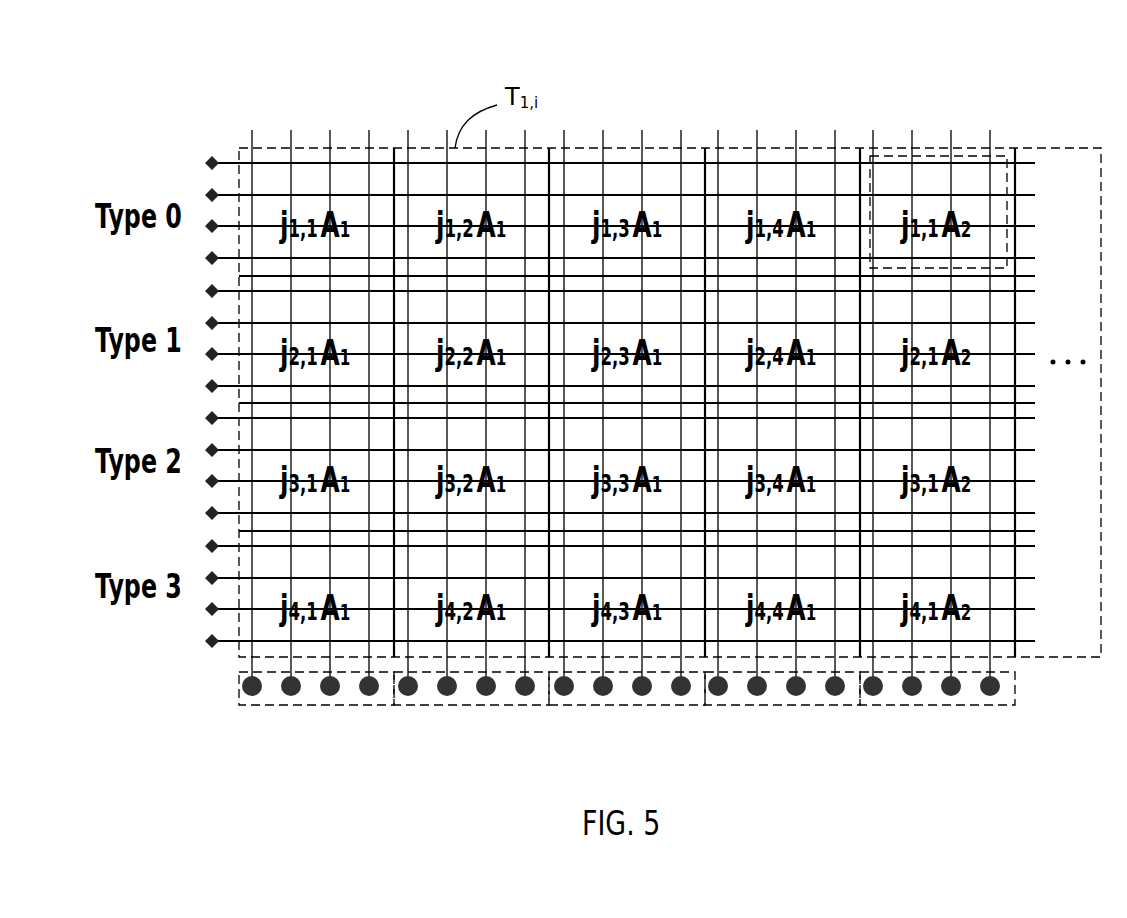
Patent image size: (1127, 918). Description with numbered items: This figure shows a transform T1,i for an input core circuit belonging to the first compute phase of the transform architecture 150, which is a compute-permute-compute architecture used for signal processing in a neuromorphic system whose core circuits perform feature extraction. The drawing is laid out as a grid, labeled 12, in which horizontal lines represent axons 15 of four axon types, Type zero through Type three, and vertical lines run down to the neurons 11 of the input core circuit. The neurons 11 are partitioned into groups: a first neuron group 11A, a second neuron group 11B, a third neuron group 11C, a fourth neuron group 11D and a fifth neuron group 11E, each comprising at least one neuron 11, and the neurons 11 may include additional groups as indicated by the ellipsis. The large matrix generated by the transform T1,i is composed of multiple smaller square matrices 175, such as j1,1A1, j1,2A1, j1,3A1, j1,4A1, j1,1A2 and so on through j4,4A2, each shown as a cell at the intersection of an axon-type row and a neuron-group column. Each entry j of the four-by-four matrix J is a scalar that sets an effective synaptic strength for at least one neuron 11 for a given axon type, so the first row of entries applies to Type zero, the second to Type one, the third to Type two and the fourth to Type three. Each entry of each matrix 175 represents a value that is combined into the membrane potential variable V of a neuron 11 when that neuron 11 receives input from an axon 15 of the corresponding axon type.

The cell array 12 is at (670, 330).
The axon 15 is at (591, 382).
The transform architecture 150 is at (586, 374).
The smaller square matrix 175 is at (949, 173).
The neuron 11 is at (621, 717).
The first neuron group 11A is at (322, 721).
The second neuron group 11B is at (484, 721).
The third neuron group 11C is at (639, 721).
The fourth neuron group 11D is at (795, 721).
The fifth neuron group 11E is at (949, 721).